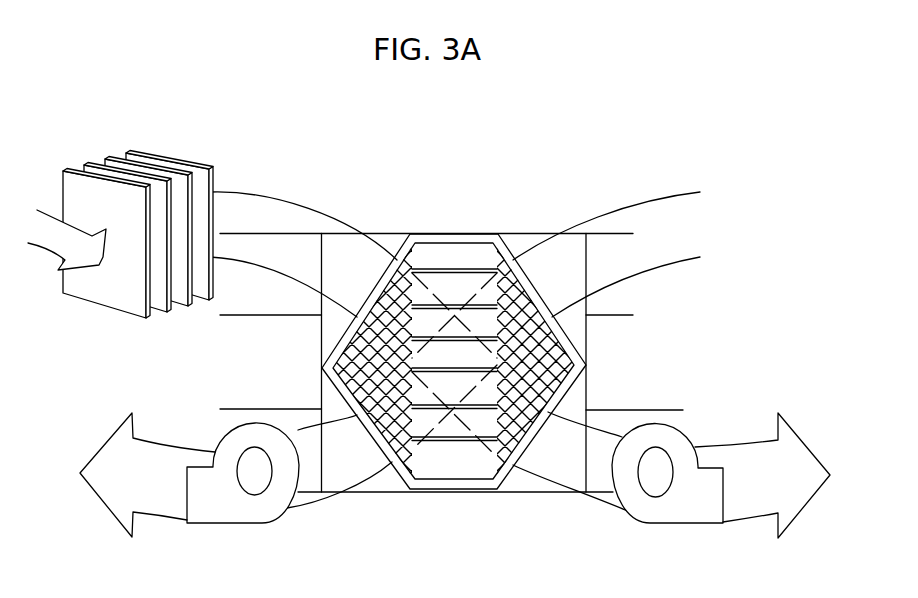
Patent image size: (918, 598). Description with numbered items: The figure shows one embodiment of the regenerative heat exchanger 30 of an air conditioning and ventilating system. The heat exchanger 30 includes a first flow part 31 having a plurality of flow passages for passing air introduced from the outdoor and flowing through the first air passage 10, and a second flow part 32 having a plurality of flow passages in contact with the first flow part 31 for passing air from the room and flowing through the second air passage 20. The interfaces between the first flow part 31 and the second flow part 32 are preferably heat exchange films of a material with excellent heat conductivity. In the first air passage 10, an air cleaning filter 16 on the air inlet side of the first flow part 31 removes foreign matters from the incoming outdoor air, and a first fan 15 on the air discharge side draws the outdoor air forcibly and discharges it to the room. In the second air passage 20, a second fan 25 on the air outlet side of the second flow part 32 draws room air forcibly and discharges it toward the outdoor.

The first air passage 10 is at (622, 417).
The first fan 15 is at (687, 513).
The air cleaning filter 16 is at (107, 300).
The second air passage 20 is at (613, 316).
The second fan 25 is at (222, 515).
The regenerative heat exchanger 30 is at (373, 233).
The first flow part 31 is at (545, 473).
The second flow part 32 is at (560, 262).